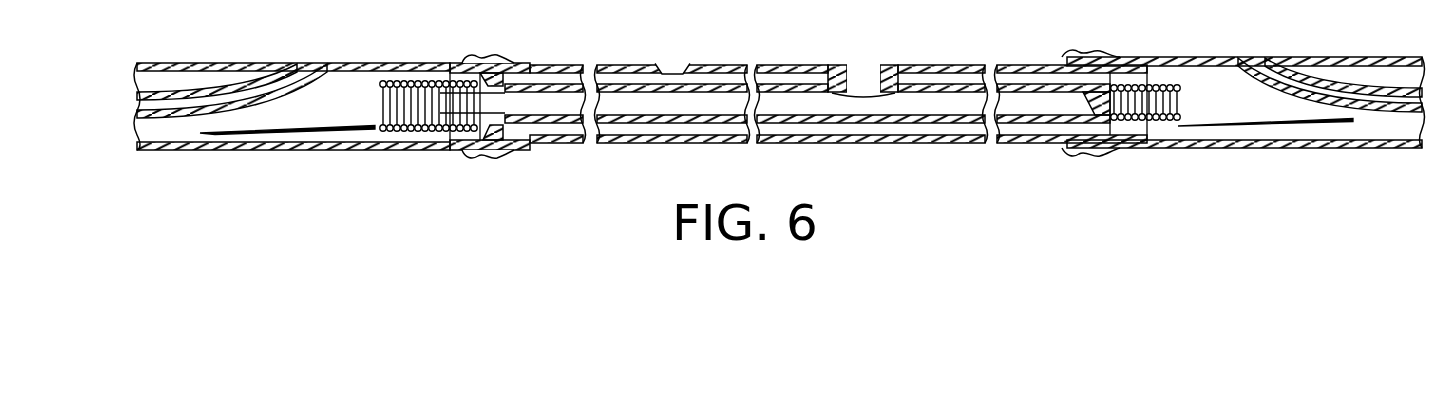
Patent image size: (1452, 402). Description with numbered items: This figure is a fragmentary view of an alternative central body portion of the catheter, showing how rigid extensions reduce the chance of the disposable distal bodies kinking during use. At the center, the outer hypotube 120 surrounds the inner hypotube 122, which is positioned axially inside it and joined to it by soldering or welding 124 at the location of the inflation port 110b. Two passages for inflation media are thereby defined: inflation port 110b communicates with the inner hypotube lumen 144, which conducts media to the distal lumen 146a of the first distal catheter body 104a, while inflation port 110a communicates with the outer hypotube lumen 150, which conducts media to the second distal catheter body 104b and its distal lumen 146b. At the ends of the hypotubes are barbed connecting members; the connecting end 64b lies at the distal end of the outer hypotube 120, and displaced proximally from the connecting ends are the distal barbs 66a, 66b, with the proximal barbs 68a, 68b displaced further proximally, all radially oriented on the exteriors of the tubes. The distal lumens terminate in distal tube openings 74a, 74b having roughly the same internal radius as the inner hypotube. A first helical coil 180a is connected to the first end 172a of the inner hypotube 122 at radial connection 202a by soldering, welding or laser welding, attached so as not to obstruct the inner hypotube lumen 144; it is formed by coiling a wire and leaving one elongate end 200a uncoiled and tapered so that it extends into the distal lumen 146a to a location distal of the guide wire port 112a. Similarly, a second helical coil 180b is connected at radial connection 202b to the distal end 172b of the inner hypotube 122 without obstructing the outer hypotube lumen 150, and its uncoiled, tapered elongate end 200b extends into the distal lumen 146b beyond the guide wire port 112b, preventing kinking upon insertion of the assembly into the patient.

The first distal catheter body 104a is at (172, 62).
The second distal catheter body 104b is at (1380, 59).
The guide wire port 112a is at (288, 63).
The guide wire port 112b is at (1268, 59).
The distal lumen 146a is at (187, 133).
The distal lumen 146b is at (1400, 125).
The elongate end 200a is at (295, 135).
The elongate end 200b is at (1297, 123).
The first end of inner hypotube 172a is at (387, 103).
The distal end of inner hypotube 172b is at (1107, 86).
The first helical coil 180a is at (413, 80).
The second helical coil 180b is at (1177, 85).
The radial connection 202a is at (507, 69).
The radial connection 202b is at (1050, 132).
The distal barb 66a is at (463, 152).
The distal barb 66b is at (1120, 150).
The proximal barb 68a is at (495, 152).
The proximal barb 68b is at (1097, 150).
The distal tube opening 74a is at (537, 150).
The distal tube opening 74b is at (1060, 143).
The connecting end 64b is at (1150, 125).
The outer hypotube 120 is at (585, 68).
The inner hypotube 122 is at (745, 70).
The inner hypotube lumen 144 is at (570, 143).
The inflation port 110a is at (670, 69).
The inflation port 110b is at (862, 72).
The soldering or welding 124 is at (887, 68).
The outer hypotube lumen 150 is at (930, 82).